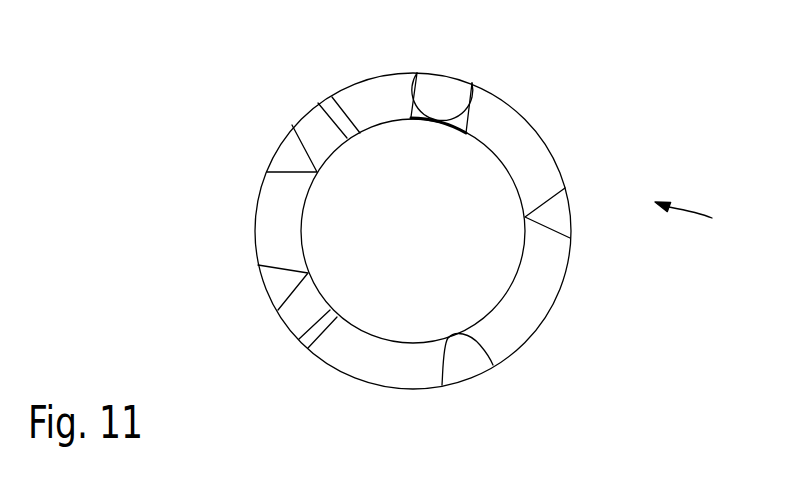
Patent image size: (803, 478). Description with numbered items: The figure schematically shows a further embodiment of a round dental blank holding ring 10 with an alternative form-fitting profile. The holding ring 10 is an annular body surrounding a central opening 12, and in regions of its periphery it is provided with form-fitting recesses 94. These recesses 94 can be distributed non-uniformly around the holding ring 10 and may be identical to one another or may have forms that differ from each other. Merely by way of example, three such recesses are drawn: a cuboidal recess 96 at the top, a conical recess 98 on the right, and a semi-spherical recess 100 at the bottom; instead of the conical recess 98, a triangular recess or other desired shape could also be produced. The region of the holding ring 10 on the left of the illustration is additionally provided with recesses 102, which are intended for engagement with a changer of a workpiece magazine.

The round dental blank holding ring 10 is at (525, 143).
The central opening 12 is at (427, 244).
The form-fitting recesses 94 is at (698, 218).
The cuboidal recess 96 is at (443, 92).
The conical recess 98 is at (555, 217).
The semi-spherical recess 100 is at (465, 362).
The recesses 102 is at (288, 158).